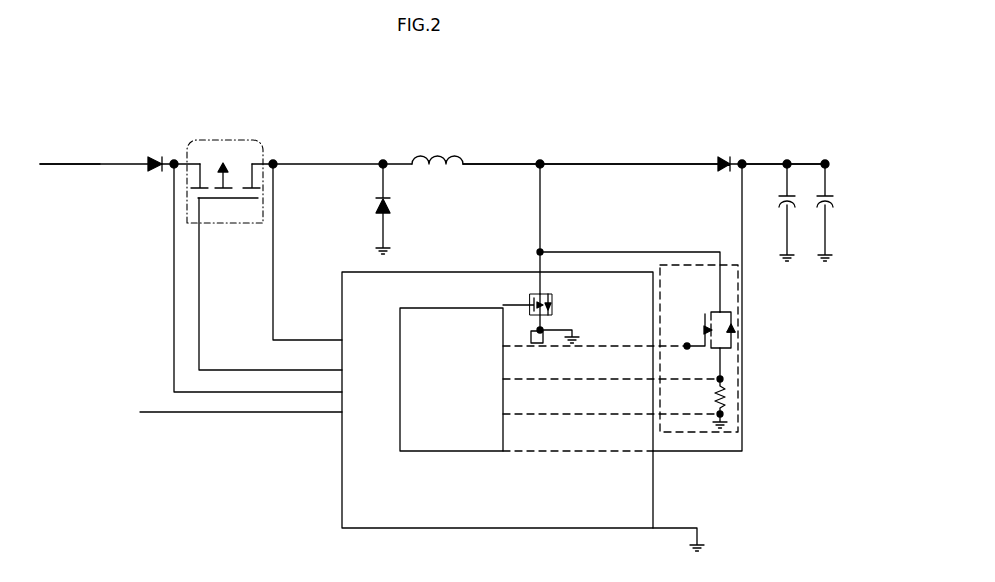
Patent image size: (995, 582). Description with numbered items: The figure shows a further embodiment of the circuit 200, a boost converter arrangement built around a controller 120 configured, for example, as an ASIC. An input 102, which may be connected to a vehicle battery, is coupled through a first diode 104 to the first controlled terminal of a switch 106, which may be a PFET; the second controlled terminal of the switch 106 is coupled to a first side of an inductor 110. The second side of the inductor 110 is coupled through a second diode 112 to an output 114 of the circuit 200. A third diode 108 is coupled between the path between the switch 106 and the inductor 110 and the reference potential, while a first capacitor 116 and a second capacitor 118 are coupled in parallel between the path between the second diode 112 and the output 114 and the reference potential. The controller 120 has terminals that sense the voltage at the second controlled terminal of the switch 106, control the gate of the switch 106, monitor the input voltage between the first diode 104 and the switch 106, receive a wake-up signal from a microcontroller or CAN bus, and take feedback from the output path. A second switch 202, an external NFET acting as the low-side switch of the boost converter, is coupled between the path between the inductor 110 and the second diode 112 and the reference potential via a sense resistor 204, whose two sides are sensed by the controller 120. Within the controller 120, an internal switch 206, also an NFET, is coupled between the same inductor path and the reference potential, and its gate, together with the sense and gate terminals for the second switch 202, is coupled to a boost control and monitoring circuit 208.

The circuit 200 is at (684, 89).
The input 102 is at (105, 158).
The first diode 104 is at (157, 174).
The switch 106 is at (231, 139).
The third diode 108 is at (375, 205).
The inductor 110 is at (437, 152).
The second diode 112 is at (657, 159).
The output 114 is at (833, 161).
The first capacitor 116 is at (790, 210).
The second capacitor 118 is at (832, 212).
The controller 120 is at (478, 271).
The second switch 202 is at (701, 322).
The sense resistor 204 is at (725, 395).
The internal switch 206 is at (527, 301).
The boost control and monitoring circuit 208 is at (505, 453).